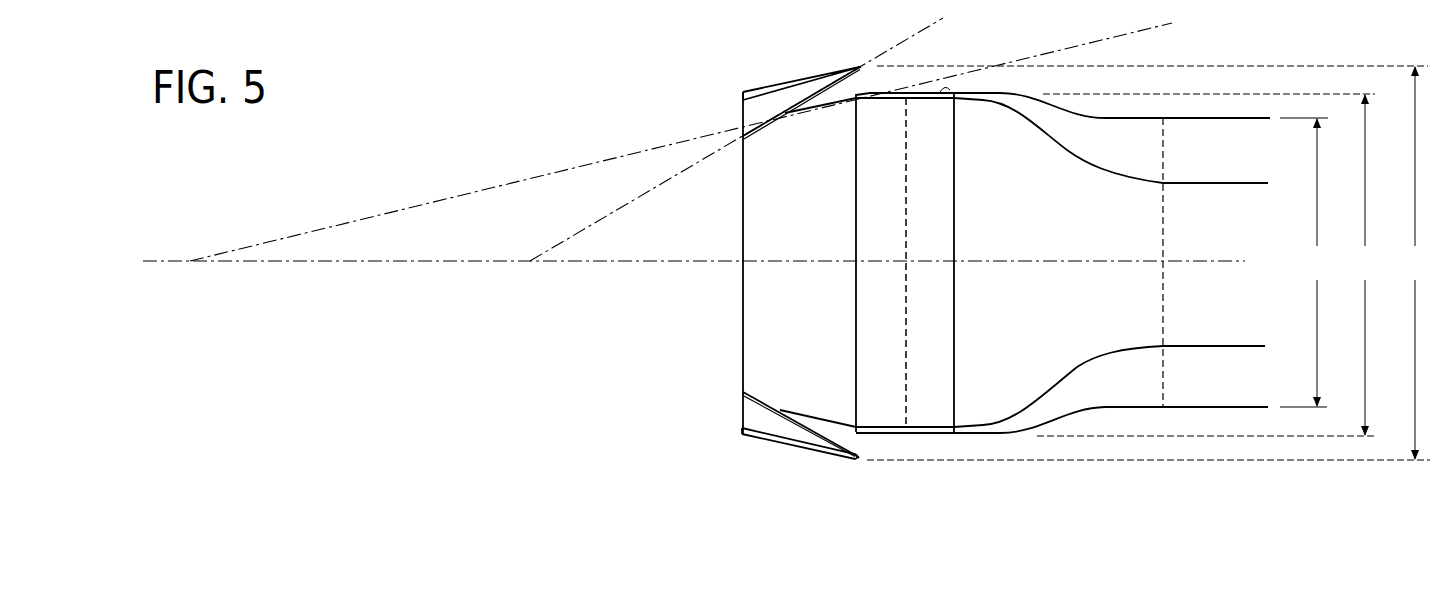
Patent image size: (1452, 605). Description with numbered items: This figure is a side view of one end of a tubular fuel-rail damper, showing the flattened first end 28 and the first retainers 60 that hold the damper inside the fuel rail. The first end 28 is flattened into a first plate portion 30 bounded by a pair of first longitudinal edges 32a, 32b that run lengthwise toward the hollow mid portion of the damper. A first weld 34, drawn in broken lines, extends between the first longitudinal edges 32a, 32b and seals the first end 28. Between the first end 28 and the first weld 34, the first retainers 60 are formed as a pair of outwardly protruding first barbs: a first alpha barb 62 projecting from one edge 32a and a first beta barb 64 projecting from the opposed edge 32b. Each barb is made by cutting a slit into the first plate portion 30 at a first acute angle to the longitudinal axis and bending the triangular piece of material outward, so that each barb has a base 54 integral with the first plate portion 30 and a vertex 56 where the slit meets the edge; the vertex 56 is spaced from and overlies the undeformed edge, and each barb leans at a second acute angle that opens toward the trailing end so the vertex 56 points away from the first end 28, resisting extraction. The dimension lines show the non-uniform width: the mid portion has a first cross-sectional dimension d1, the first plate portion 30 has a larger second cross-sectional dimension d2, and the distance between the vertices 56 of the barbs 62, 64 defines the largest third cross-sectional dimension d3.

The first end 28 is at (742, 327).
The first plate portion 30 is at (1025, 261).
The first longitudinal edge 32a is at (956, 103).
The first longitudinal edge 32b is at (980, 436).
The first weld 34 is at (903, 362).
The base 54 is at (783, 103).
The vertex 56 is at (862, 66).
The first retainers 60 is at (780, 292).
The first alpha barb 62 is at (795, 80).
The first beta barb 64 is at (808, 438).
The first cross-sectional dimension d1 is at (1308, 262).
The second cross-sectional dimension d2 is at (1210, 265).
The third cross-sectional dimension d3 is at (1150, 263).